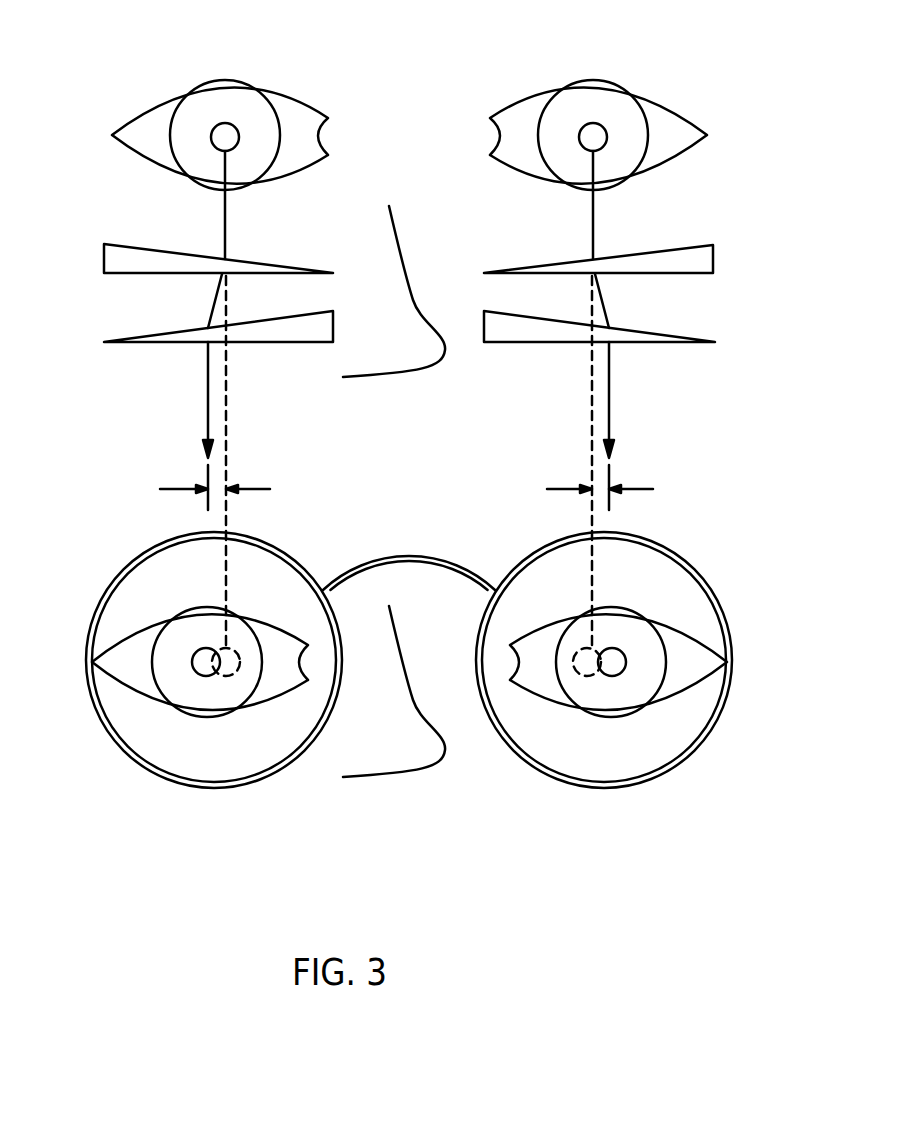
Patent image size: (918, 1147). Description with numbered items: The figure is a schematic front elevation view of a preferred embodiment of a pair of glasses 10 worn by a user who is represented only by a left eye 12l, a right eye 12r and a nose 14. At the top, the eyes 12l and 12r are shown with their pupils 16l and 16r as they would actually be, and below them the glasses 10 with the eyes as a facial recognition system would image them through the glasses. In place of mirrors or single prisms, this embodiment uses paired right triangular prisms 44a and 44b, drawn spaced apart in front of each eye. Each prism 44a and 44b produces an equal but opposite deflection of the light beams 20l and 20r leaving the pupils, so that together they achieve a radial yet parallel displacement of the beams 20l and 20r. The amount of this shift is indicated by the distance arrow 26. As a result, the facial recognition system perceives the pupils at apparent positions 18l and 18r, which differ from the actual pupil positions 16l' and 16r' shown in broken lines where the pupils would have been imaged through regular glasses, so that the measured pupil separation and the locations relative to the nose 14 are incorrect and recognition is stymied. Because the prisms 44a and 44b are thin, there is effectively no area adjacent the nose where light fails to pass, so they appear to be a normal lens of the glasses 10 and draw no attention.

The glasses 10 is at (401, 556).
The right eye 12r is at (148, 104).
The left eye 12l is at (670, 105).
The nose 14 is at (413, 287).
The right pupil 16r is at (279, 77).
The left pupil 16l is at (562, 88).
The actual right pupil position 16r' is at (258, 751).
The actual left pupil position 16l' is at (545, 742).
The perceived right pupil position 18r is at (200, 669).
The perceived left pupil position 18l is at (622, 670).
The right light beam 20r is at (208, 408).
The left light beam 20l is at (609, 391).
The distance arrow 26 is at (218, 490).
The first right triangular prism 44a is at (120, 247).
The second right triangular prism 44b is at (198, 330).